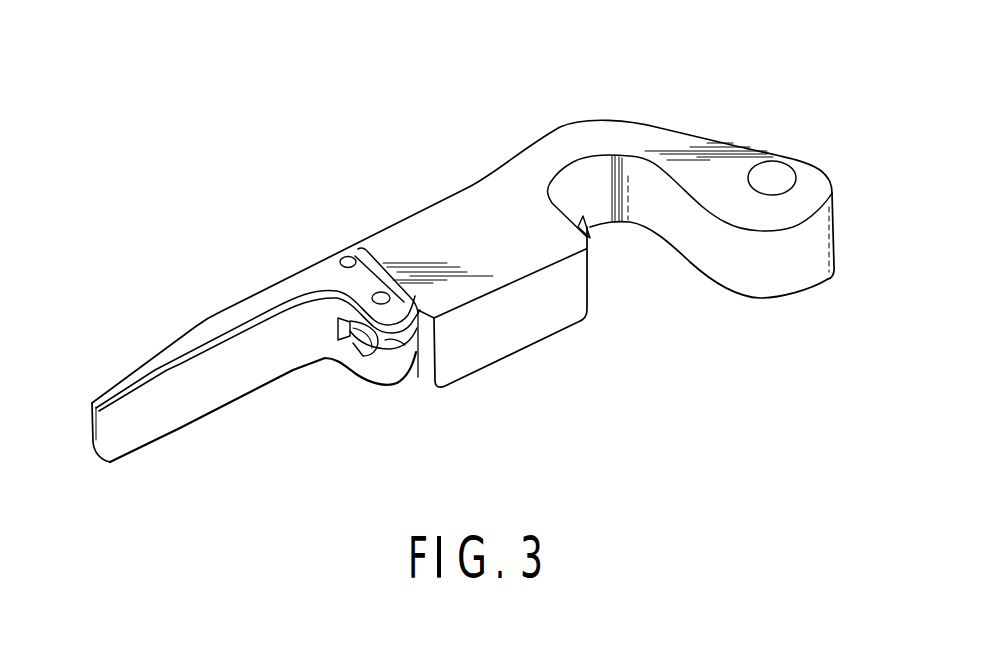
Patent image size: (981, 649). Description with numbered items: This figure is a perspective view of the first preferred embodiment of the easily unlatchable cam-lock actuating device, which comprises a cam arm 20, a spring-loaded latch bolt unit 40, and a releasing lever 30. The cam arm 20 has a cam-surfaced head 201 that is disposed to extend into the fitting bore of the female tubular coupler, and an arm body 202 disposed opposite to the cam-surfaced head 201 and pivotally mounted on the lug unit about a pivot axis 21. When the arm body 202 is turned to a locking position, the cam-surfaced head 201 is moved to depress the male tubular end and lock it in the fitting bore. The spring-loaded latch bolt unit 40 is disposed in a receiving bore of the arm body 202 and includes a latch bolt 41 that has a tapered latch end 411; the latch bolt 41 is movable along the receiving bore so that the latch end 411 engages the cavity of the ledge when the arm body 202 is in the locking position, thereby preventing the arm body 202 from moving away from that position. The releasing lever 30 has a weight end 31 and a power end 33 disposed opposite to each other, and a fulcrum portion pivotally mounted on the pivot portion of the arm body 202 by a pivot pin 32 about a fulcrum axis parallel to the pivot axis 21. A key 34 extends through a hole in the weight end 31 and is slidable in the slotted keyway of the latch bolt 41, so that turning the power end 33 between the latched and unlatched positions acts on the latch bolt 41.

The cam arm 20 is at (662, 118).
The pivot axis 21 is at (777, 172).
The cam-surfaced head 201 is at (827, 247).
The arm body 202 is at (530, 330).
The releasing lever 30 is at (203, 313).
The weight end 31 is at (379, 378).
The pivot pin 32 is at (347, 256).
The power end 33 is at (92, 420).
The key 34 is at (382, 292).
The spring-loaded latch bolt unit 40 is at (398, 346).
The latch bolt 41 is at (363, 343).
The latch end 411 is at (593, 228).